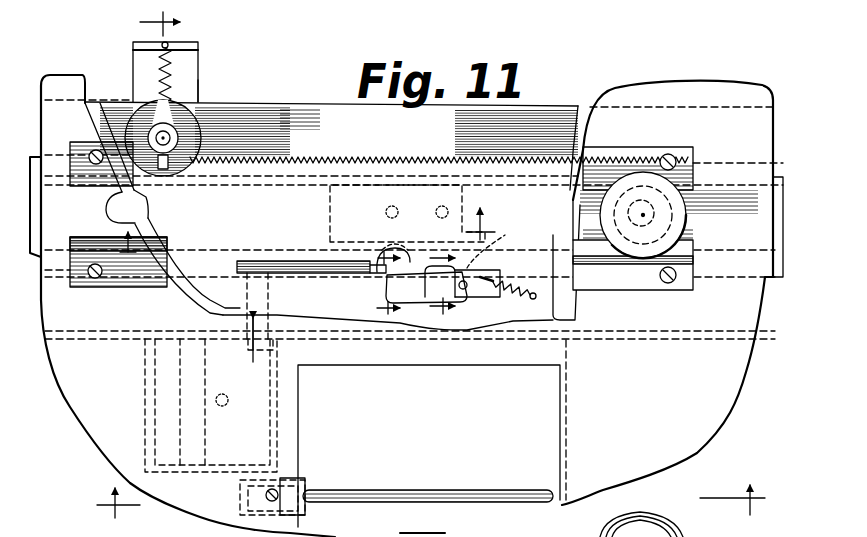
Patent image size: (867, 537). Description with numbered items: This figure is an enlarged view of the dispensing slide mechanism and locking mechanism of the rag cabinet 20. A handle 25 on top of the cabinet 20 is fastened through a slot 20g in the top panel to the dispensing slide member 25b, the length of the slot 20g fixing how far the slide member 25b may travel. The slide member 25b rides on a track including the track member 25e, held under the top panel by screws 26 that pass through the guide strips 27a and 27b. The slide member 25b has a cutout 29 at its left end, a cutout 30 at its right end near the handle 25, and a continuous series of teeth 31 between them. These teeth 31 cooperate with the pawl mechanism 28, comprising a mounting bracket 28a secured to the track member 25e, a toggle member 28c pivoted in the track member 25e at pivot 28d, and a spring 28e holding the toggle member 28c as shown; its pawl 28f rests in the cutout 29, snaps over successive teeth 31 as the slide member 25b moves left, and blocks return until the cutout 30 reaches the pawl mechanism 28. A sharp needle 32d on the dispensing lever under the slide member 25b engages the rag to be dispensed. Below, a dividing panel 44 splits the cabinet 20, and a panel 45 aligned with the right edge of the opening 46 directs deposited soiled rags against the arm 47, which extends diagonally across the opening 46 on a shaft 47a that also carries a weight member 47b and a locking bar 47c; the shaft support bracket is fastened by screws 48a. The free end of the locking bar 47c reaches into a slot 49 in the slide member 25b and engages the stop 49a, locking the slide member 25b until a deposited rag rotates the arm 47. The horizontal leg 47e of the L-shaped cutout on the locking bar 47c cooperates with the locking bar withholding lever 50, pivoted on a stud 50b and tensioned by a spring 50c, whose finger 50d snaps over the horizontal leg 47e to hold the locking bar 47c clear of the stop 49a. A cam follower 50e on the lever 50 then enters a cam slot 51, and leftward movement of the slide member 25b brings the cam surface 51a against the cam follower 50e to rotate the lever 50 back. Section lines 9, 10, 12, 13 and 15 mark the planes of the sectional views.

The section line 9 is at (394, 285).
The section line 10 is at (444, 285).
The section line 12 is at (420, 509).
The section line 13 is at (306, 228).
The section line 15 is at (195, 20).
The cabinet 20 is at (300, 412).
The slot 20g is at (582, 297).
The handle 25 is at (690, 227).
The dispensing slide member 25b is at (487, 178).
The track member 25e is at (288, 105).
The screws 26 is at (97, 280).
The guide strip 27a is at (693, 147).
The guide strip 27b is at (695, 289).
The pawl mechanism 28 is at (205, 80).
The mounting bracket 28a is at (200, 91).
The toggle member 28c is at (187, 128).
The pivot 28d is at (173, 139).
The spring 28e is at (160, 73).
The pawl 28f is at (192, 170).
The cutout 29 is at (170, 185).
The cutout 30 is at (693, 172).
The teeth 31 is at (423, 150).
The sharp needle 32d is at (195, 215).
The dividing panel 44 is at (727, 343).
The panel 45 is at (560, 428).
The opening 46 is at (445, 423).
The arm 47 is at (486, 492).
The shaft 47a is at (283, 470).
The weight member 47b is at (197, 453).
The locking bar 47c is at (327, 272).
The horizontal leg 47e is at (407, 213).
The screws 48a is at (133, 345).
The slot 49 is at (297, 260).
The stop 49a is at (350, 265).
The locking bar withholding lever 50 is at (469, 288).
The stud 50b is at (463, 298).
The spring 50c is at (520, 298).
The finger 50d is at (385, 283).
The cam follower 50e is at (437, 273).
The cam slot 51 is at (480, 264).
The cam surface 51a is at (500, 272).